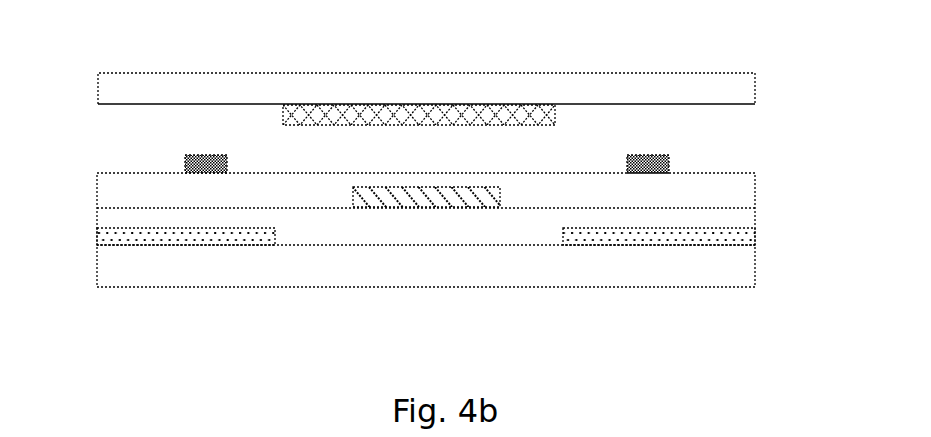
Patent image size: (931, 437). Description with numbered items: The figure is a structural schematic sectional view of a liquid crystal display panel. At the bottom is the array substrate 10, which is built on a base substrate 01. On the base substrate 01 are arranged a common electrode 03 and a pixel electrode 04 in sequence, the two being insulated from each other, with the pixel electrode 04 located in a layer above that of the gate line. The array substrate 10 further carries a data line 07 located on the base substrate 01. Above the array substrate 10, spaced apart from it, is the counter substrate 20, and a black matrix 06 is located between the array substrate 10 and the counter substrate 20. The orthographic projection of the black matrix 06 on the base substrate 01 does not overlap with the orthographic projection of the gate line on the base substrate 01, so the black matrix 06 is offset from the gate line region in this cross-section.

The counter substrate 20 is at (157, 88).
The black matrix 06 is at (467, 112).
The pixel electrode 04 is at (203, 165).
The array substrate 10 is at (762, 144).
The base substrate 01 is at (537, 272).
The common electrode 03 is at (195, 238).
The data line 07 is at (427, 192).